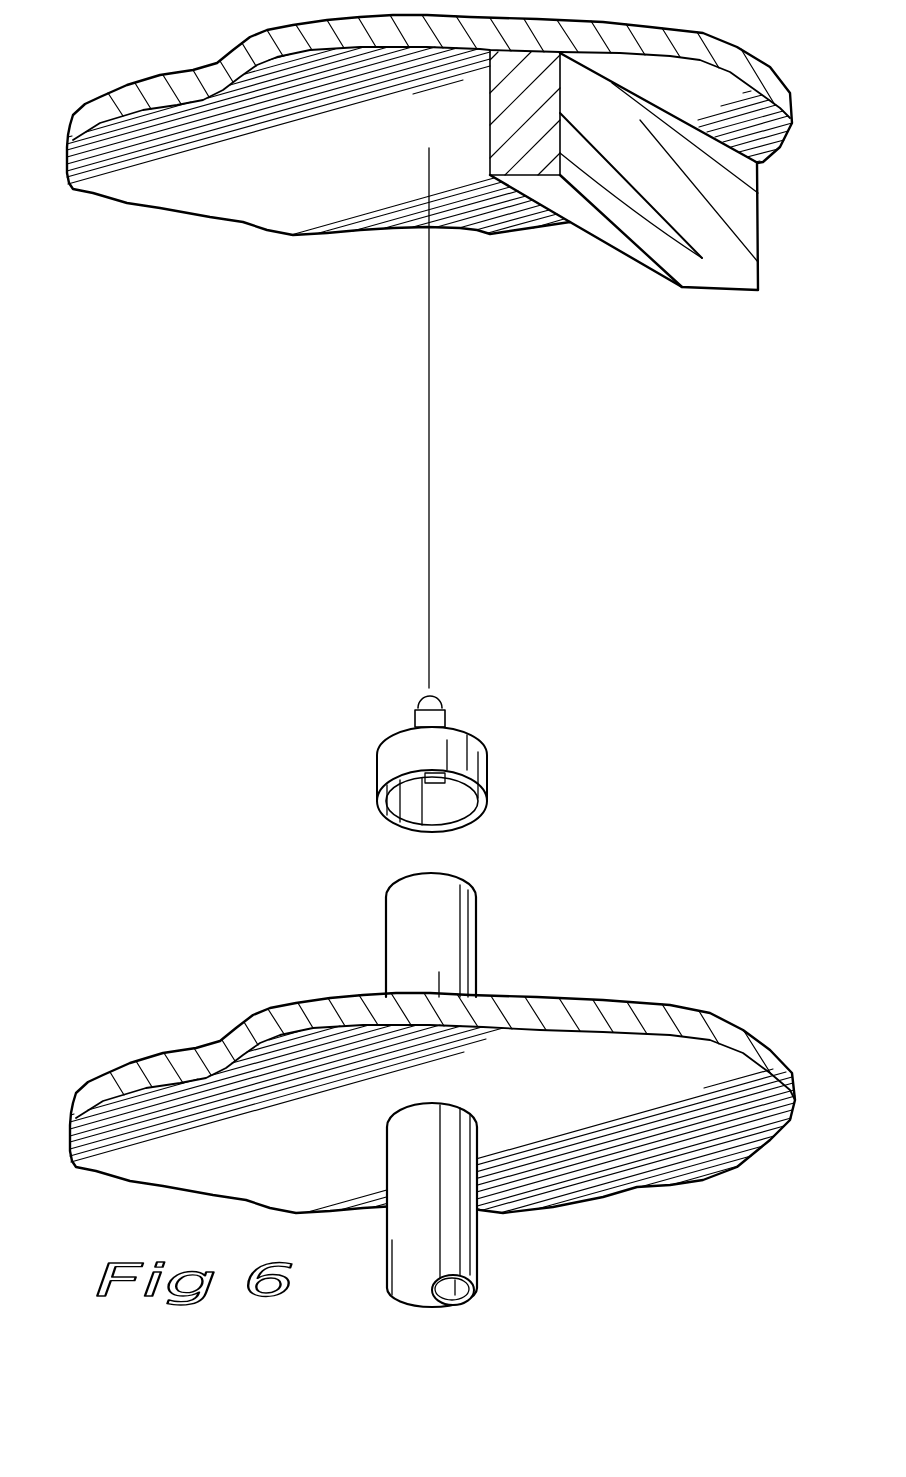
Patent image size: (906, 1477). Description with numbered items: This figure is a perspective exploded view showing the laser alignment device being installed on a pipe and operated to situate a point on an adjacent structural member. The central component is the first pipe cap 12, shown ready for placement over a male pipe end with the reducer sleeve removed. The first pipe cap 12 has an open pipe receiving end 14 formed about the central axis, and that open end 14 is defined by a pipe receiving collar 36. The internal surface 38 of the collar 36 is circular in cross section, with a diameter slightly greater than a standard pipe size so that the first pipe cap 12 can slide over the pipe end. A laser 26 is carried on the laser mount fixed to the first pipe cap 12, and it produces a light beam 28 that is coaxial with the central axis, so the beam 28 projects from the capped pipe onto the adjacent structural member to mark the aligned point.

The light beam 28 is at (430, 483).
The laser 26 is at (418, 703).
The first pipe cap 12 is at (492, 740).
The pipe receiving collar 36 is at (385, 763).
The internal surface 38 is at (413, 827).
The open pipe receiving end 14 is at (478, 817).